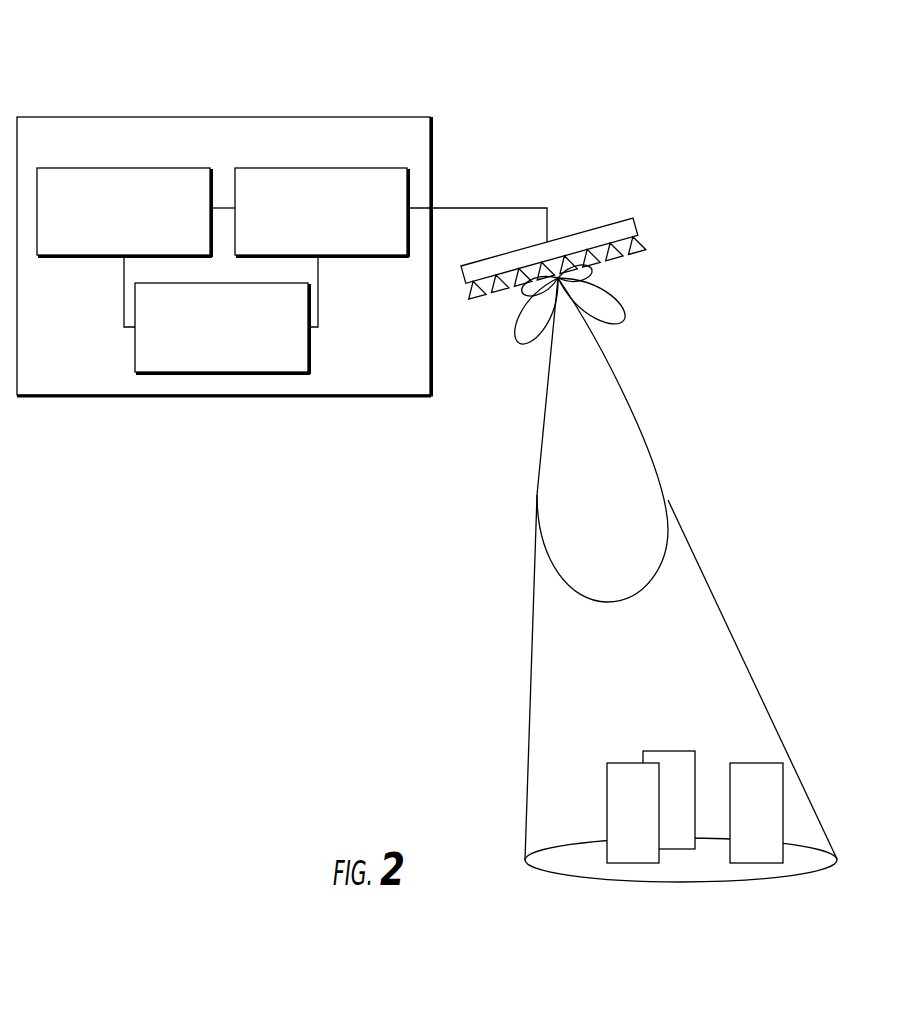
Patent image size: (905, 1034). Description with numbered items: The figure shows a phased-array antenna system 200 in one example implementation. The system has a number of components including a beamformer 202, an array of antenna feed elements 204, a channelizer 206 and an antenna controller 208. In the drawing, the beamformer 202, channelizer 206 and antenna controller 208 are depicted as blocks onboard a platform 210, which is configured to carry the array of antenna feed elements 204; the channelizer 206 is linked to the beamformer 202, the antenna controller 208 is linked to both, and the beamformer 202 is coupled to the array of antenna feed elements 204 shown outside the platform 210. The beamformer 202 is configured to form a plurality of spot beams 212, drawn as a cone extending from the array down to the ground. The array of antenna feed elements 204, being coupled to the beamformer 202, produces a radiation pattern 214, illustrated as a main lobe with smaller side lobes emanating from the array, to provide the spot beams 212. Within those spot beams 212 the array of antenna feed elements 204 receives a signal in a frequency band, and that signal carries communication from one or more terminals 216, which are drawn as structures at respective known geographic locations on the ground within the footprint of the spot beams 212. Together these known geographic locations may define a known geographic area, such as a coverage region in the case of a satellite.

The phased-array antenna system 200 is at (165, 62).
The beamformer 202 is at (340, 168).
The array of antenna feed elements 204 is at (572, 207).
The channelizer 206 is at (190, 168).
The antenna controller 208 is at (312, 357).
The platform 210 is at (213, 117).
The spot beams 212 is at (735, 645).
The radiation pattern 214 is at (660, 423).
The terminals 216 is at (763, 763).